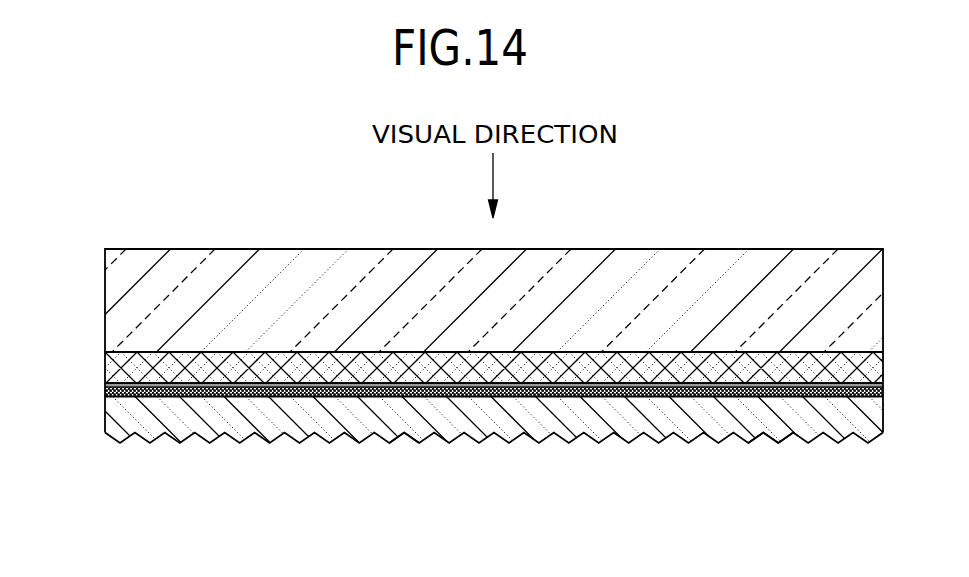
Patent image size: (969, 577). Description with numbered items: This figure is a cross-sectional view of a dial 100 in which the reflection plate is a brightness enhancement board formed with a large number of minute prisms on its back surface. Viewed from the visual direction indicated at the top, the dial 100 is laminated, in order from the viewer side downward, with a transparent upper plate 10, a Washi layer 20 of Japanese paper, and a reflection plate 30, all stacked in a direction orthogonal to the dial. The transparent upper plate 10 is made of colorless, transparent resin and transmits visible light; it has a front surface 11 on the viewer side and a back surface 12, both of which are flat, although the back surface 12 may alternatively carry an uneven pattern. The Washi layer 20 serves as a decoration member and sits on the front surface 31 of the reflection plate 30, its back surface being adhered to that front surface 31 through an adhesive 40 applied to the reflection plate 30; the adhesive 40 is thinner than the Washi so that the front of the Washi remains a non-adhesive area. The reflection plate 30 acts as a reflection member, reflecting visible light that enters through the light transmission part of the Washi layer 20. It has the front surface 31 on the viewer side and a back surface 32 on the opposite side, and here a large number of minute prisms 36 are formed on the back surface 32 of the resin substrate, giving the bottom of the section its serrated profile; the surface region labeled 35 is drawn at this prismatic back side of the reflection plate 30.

The dial 100 is at (870, 243).
The transparent upper plate 10 is at (105, 302).
The front surface 11 is at (155, 249).
The back surface 12 is at (250, 362).
The Washi layer 20 is at (105, 370).
The adhesive 40 is at (105, 390).
The reflection plate 30 is at (105, 418).
The front surface 31 is at (299, 390).
The back surface 32 is at (412, 441).
The uneven surface 35 is at (776, 437).
The minute prisms 36 is at (762, 436).